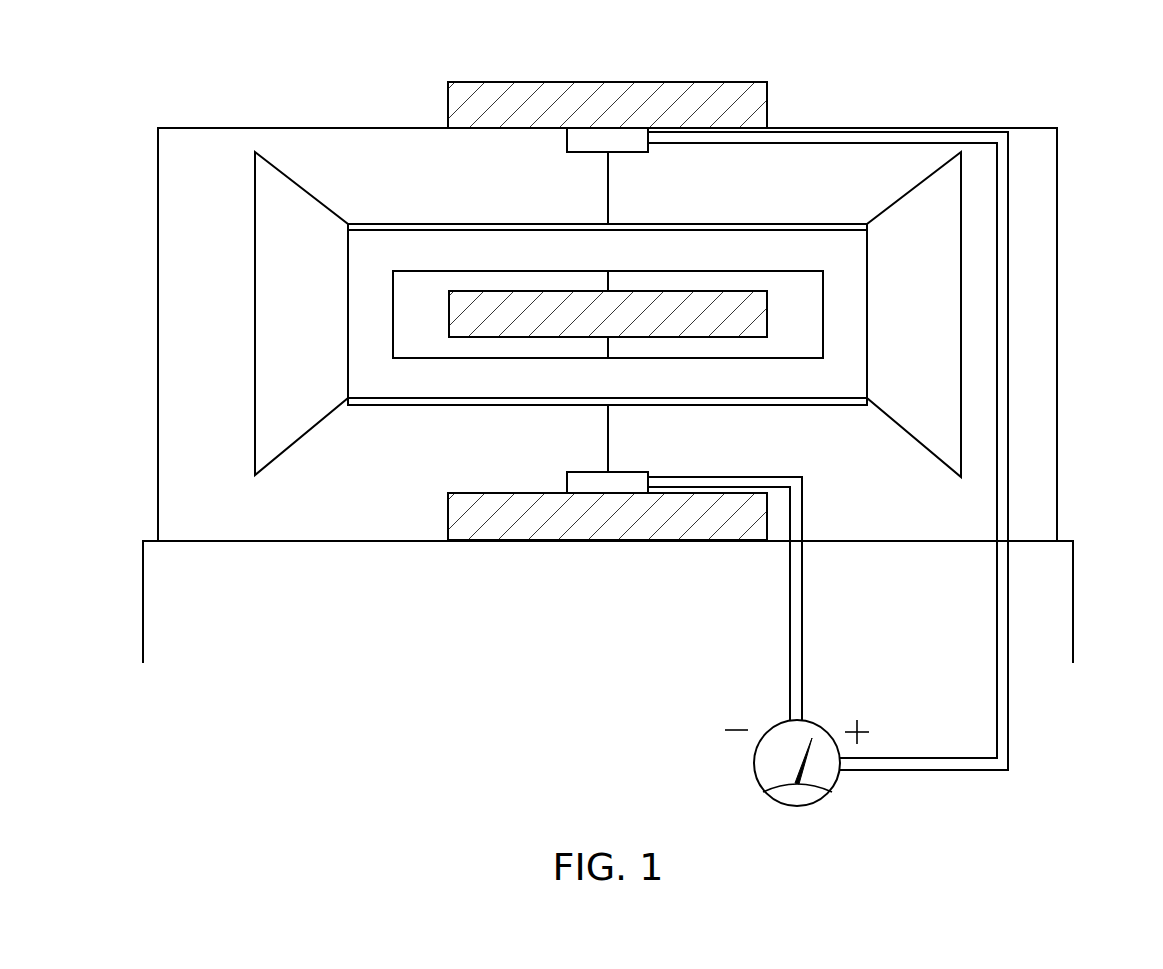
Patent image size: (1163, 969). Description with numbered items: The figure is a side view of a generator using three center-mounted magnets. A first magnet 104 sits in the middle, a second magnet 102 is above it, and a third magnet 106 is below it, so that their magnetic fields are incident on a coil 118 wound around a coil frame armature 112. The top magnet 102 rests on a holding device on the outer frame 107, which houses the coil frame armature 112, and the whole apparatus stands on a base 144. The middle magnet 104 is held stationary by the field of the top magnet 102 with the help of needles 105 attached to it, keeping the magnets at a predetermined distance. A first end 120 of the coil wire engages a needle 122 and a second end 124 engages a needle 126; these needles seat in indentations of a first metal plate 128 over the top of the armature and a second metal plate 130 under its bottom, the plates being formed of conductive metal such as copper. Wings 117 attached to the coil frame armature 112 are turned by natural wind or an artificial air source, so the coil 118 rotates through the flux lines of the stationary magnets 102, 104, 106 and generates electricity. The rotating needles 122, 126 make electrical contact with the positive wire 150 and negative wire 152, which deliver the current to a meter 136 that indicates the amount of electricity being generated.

The second magnet 102 is at (718, 90).
The first magnet 104 is at (473, 297).
The needles 105 is at (612, 280).
The third magnet 106 is at (448, 520).
The outer frame 107 is at (1057, 222).
The coil frame armature 112 is at (765, 388).
The wings 117 is at (255, 308).
The coil 118 is at (820, 222).
The first end of coil wire 120 is at (604, 222).
The needle 122 is at (610, 170).
The second end of coil wire 124 is at (604, 406).
The needle 126 is at (610, 430).
The first metal plate 128 is at (572, 140).
The second metal plate 130 is at (572, 487).
The meter 136 is at (797, 808).
The base 144 is at (143, 600).
The positive wire 150 is at (1010, 402).
The negative wire 152 is at (804, 642).